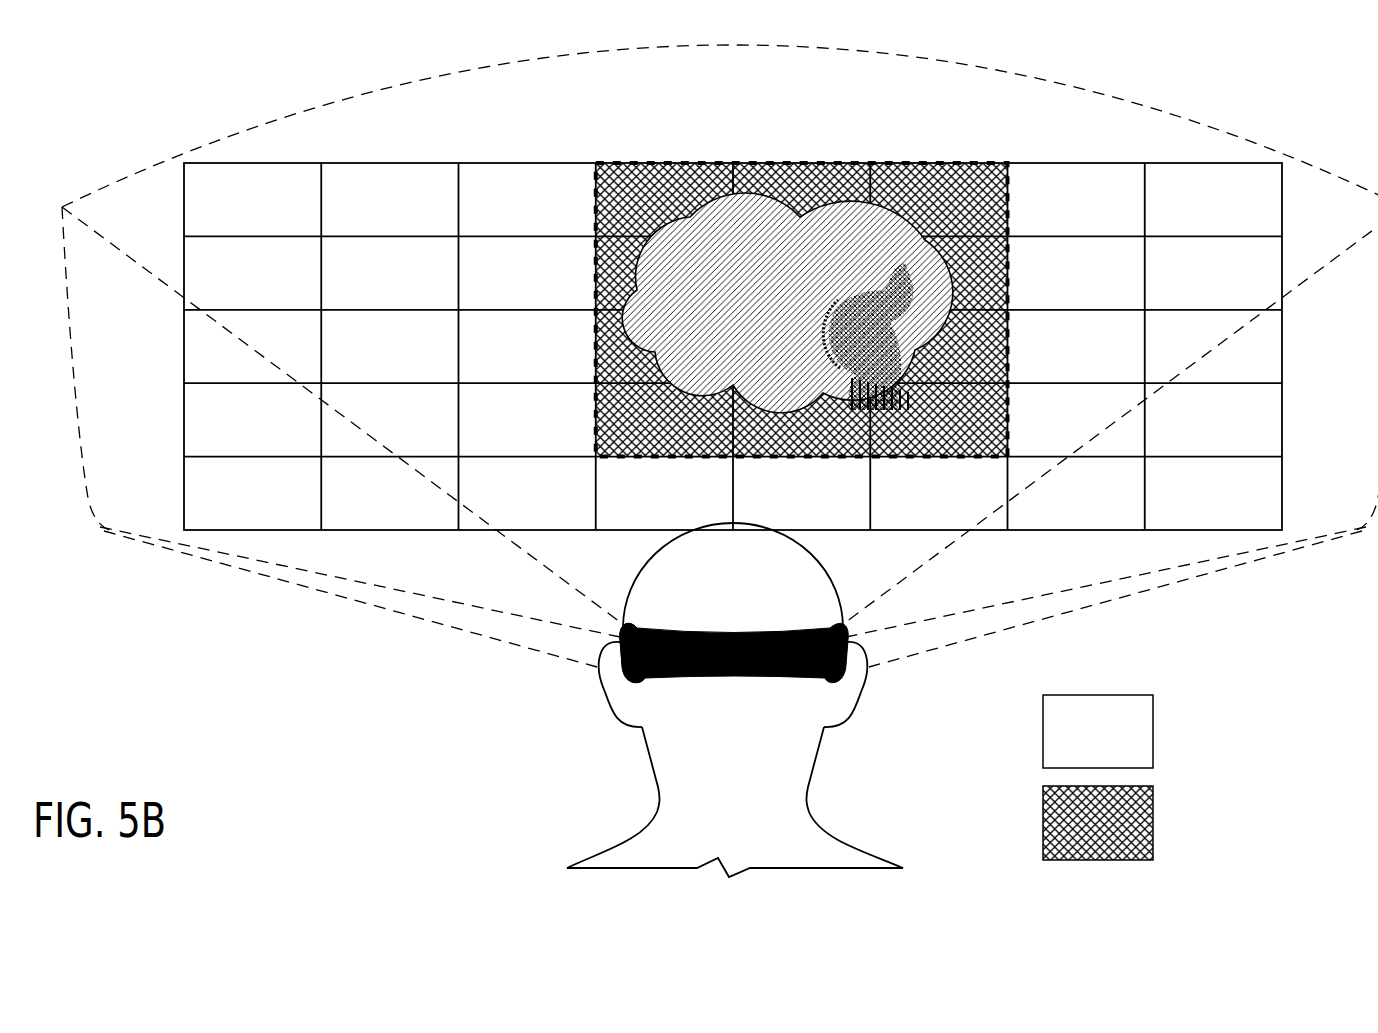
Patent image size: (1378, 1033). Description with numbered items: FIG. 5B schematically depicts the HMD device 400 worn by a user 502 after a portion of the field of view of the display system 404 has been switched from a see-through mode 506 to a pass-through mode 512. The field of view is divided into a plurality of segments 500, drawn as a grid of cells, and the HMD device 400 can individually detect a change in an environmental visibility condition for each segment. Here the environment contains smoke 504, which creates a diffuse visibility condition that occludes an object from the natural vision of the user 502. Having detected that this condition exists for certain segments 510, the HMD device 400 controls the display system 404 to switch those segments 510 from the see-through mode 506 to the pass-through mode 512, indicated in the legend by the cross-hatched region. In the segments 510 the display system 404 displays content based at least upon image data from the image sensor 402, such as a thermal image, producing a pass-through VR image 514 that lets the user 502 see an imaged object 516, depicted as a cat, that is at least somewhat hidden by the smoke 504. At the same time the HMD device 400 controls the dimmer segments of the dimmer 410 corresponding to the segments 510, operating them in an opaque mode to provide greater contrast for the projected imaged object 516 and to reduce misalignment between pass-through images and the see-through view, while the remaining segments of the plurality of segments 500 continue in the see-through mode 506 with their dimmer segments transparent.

The HMD device 400 is at (782, 628).
The image sensor 402 is at (634, 608).
The display system 404 is at (575, 678).
The dimmer 410 is at (887, 686).
The plurality of segments 500 is at (393, 163).
The user 502 is at (753, 751).
The smoke 504 is at (763, 238).
The see-through mode 506 is at (1186, 731).
The segments 510 is at (593, 202).
The pass-through mode 512 is at (1189, 823).
The pass-through VR image 514 is at (916, 178).
The imaged object 516 is at (950, 353).